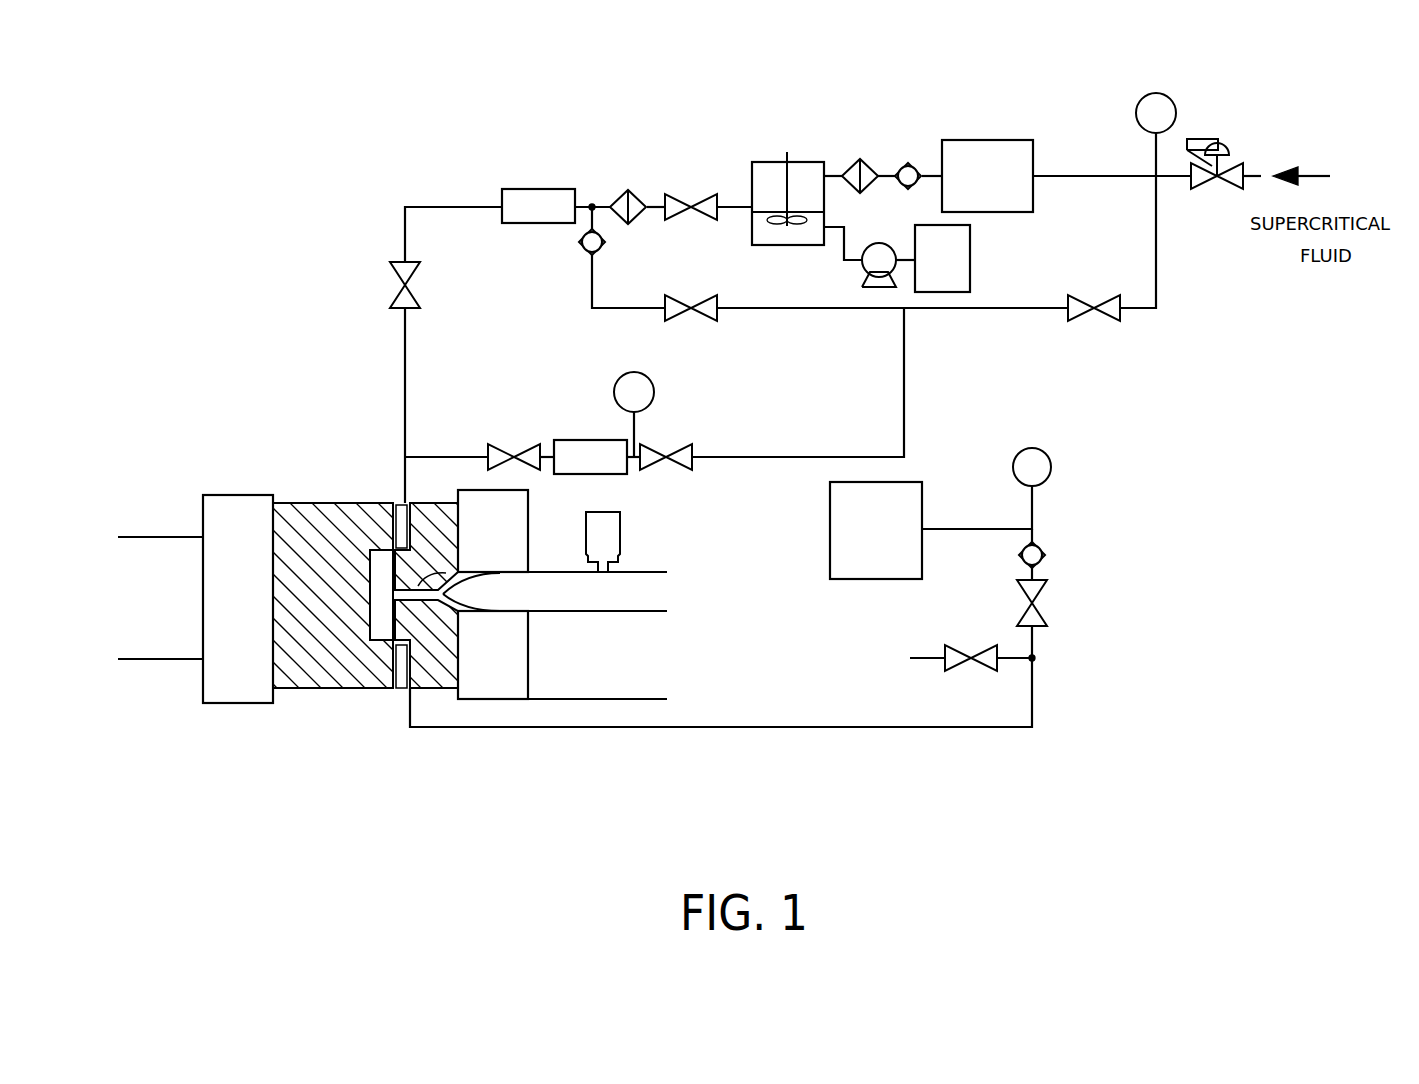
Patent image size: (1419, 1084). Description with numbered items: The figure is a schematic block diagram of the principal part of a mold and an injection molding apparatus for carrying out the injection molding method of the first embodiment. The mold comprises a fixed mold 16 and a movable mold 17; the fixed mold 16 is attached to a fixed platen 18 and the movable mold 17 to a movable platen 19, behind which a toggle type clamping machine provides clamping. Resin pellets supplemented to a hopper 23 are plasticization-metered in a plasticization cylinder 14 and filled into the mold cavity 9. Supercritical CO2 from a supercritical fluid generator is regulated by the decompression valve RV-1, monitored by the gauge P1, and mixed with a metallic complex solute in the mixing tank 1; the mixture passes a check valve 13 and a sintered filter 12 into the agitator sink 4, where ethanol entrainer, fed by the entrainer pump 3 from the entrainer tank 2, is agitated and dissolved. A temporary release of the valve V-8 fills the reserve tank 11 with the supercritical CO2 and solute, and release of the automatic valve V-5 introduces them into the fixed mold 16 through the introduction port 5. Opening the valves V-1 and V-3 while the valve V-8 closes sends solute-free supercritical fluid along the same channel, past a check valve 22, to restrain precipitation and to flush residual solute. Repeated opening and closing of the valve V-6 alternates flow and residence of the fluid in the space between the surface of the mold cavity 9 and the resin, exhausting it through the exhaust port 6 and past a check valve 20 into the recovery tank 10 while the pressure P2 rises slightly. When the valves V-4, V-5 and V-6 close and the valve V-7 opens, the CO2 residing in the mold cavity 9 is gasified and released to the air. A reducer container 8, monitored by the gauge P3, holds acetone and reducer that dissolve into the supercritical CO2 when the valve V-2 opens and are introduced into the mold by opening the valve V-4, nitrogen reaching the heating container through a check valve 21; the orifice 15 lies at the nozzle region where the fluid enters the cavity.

The mixing tank 1 is at (987, 176).
The entrainer tank 2 is at (942, 258).
The entrainer pump 3 is at (879, 265).
The agitator sink 4 is at (788, 198).
The introduction port 5 is at (377, 503).
The exhaust port 6 is at (363, 688).
The reducer container 8 is at (590, 457).
The mold cavity 9 is at (381, 595).
The recovery tank 10 is at (876, 530).
The reserve tank 11 is at (518, 192).
The sintered filter 12 is at (860, 166).
The check valve 13 is at (908, 164).
The plasticization cylinder 14 is at (508, 592).
The nozzle orifice 15 is at (440, 570).
The fixed mold 16 is at (435, 680).
The movable mold 17 is at (320, 522).
The fixed platen 18 is at (493, 594).
The movable platen 19 is at (238, 599).
The check valve 20 is at (1048, 553).
The check valve 21 is at (628, 196).
The check valve 22 is at (592, 242).
The hopper 23 is at (603, 542).
The valve V-1 is at (1094, 298).
The valve V-2 is at (672, 447).
The valve V-3 is at (714, 323).
The valve V-4 is at (505, 447).
The automatic valve V-5 is at (425, 285).
The valve V-6 is at (1052, 603).
The valve V-7 is at (971, 647).
The valve V-8 is at (700, 196).
The decompression valve RV-1 is at (1258, 128).
The pressure gauge P1 is at (1156, 113).
The pressure P2 is at (1032, 467).
The pressure gauge P3 is at (634, 392).